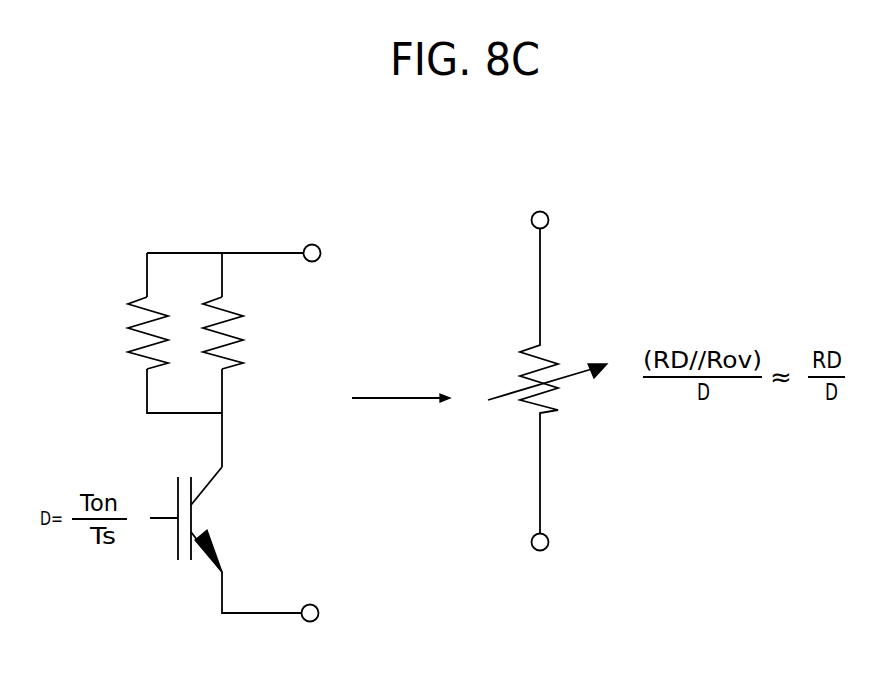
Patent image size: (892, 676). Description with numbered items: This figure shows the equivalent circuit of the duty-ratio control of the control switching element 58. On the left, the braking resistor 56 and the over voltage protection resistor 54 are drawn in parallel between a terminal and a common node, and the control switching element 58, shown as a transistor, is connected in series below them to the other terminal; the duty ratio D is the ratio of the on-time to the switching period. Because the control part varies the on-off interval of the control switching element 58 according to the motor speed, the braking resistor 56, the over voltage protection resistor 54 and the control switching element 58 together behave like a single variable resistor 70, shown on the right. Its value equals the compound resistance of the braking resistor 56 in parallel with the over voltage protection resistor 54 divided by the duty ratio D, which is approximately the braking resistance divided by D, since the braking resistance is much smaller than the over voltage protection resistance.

The braking resistor 56 is at (140, 353).
The over voltage protection resistor 54 is at (237, 362).
The control switching element 58 is at (177, 548).
The variable resistor 70 is at (553, 412).